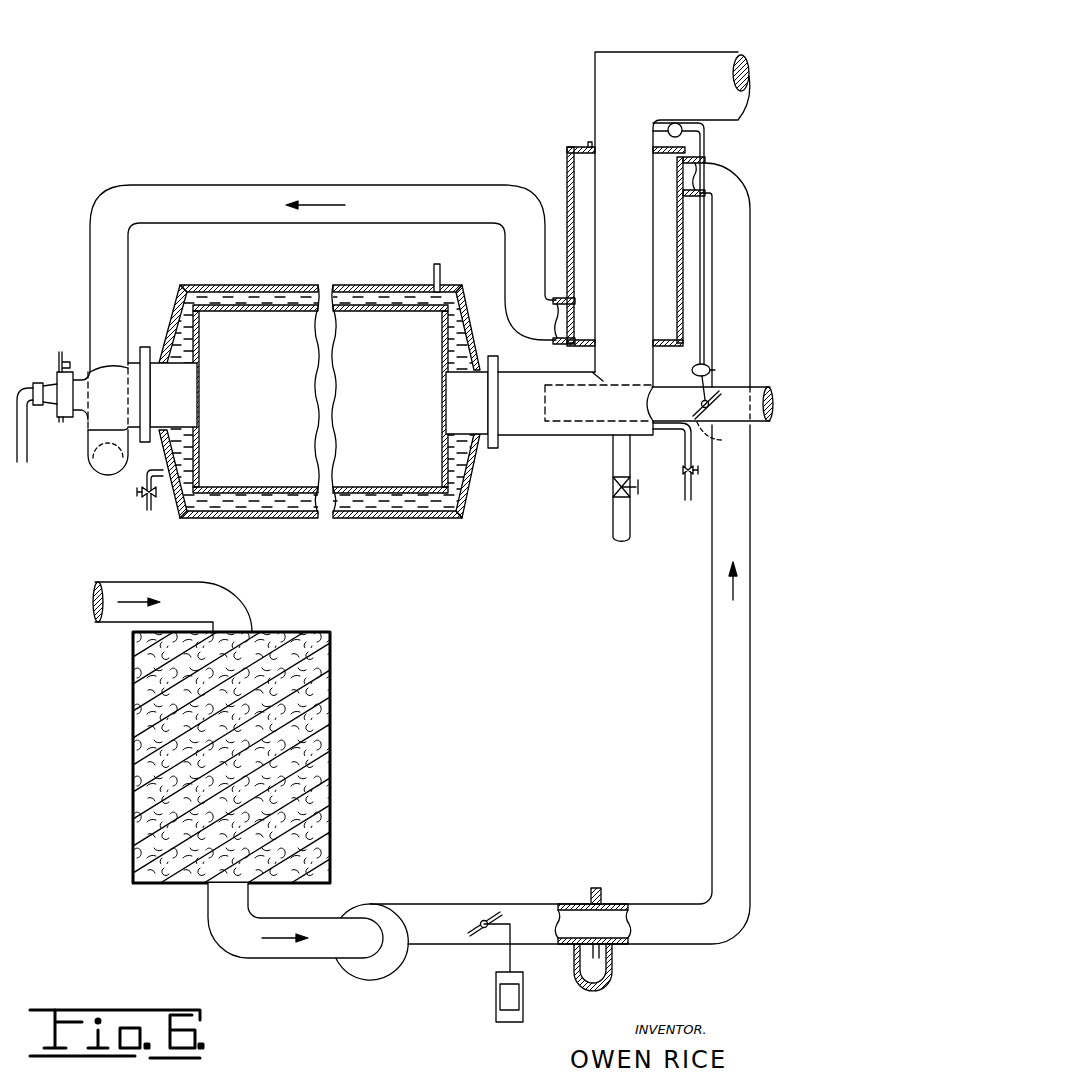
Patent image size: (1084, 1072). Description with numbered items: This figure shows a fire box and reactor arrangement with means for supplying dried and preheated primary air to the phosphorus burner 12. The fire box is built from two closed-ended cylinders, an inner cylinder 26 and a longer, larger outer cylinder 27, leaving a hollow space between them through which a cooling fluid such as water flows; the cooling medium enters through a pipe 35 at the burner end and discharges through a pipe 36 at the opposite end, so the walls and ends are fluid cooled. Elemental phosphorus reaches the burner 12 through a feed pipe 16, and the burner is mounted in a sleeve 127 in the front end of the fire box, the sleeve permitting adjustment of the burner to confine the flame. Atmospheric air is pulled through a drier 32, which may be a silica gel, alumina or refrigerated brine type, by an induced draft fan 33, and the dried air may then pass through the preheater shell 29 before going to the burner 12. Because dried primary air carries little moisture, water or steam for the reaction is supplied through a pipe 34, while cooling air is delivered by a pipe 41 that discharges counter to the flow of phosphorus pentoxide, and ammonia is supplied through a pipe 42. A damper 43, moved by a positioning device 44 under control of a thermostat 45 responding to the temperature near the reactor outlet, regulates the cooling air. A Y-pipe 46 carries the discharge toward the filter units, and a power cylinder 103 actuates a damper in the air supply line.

The phosphorus burner 12 is at (86, 373).
The phosphorus feed pipe 16 is at (27, 446).
The sleeve 127 is at (172, 378).
The inner cylinder 26 is at (378, 487).
The outer cylinder 27 is at (364, 512).
The hollow metal shell 29 is at (567, 165).
The drier 32 is at (333, 745).
The induced draft fan 33 is at (362, 980).
The water pipe 34 is at (684, 488).
The cooling medium inlet pipe 35 is at (146, 506).
The cooling medium outlet pipe 36 is at (436, 280).
The cooling air pipe 41 is at (690, 386).
The ammonia pipe 42 is at (612, 524).
The damper 43 is at (707, 430).
The positioning device 44 is at (709, 368).
The thermostat 45 is at (645, 107).
The Y-pipe 46 is at (737, 52).
The power cylinder 103 is at (568, 1024).